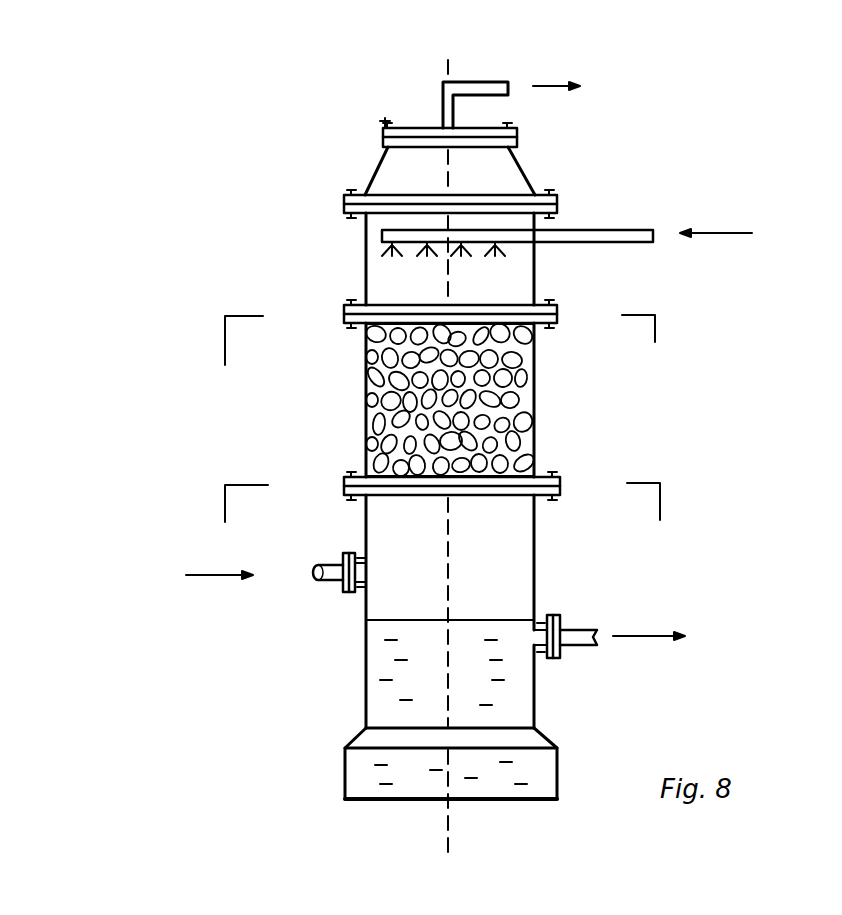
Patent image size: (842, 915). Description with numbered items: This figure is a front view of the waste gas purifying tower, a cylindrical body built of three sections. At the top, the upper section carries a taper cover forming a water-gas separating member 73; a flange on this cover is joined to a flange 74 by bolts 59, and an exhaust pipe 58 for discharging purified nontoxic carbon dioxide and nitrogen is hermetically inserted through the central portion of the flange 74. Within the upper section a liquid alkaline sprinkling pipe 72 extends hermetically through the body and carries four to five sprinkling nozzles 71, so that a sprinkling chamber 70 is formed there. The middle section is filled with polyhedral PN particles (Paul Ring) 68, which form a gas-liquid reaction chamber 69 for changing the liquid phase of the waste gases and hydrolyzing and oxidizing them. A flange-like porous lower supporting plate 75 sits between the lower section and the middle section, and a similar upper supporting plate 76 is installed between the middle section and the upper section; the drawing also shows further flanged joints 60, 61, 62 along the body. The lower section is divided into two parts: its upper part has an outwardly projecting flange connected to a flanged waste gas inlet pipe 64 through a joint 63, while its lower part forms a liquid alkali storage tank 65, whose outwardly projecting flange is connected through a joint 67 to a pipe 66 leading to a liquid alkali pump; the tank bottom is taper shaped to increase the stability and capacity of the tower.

The exhaust pipe 58 is at (484, 65).
The bolts 59 is at (356, 77).
The flange 60 is at (423, 166).
The flange 61 is at (424, 289).
The flange 62 is at (428, 450).
The inlet flange 63 is at (325, 540).
The waste gas inlet pipe 64 is at (305, 611).
The liquid alkali storage tank 65 is at (498, 702).
The pipe 66 is at (614, 669).
The outlet flange 67 is at (583, 610).
The polyhedral PN particles (Paul Ring) 68 is at (615, 499).
The gas-liquid reaction chamber 69 is at (495, 399).
The sprinkling chamber 70 is at (503, 341).
The sprinkling nozzles 71 is at (505, 270).
The liquid alkaline sprinkling pipe 72 is at (584, 266).
The water-gas separating member 73 is at (519, 171).
The flange 74 is at (526, 130).
The lower supporting plate 75 is at (598, 523).
The upper supporting plate 76 is at (603, 339).